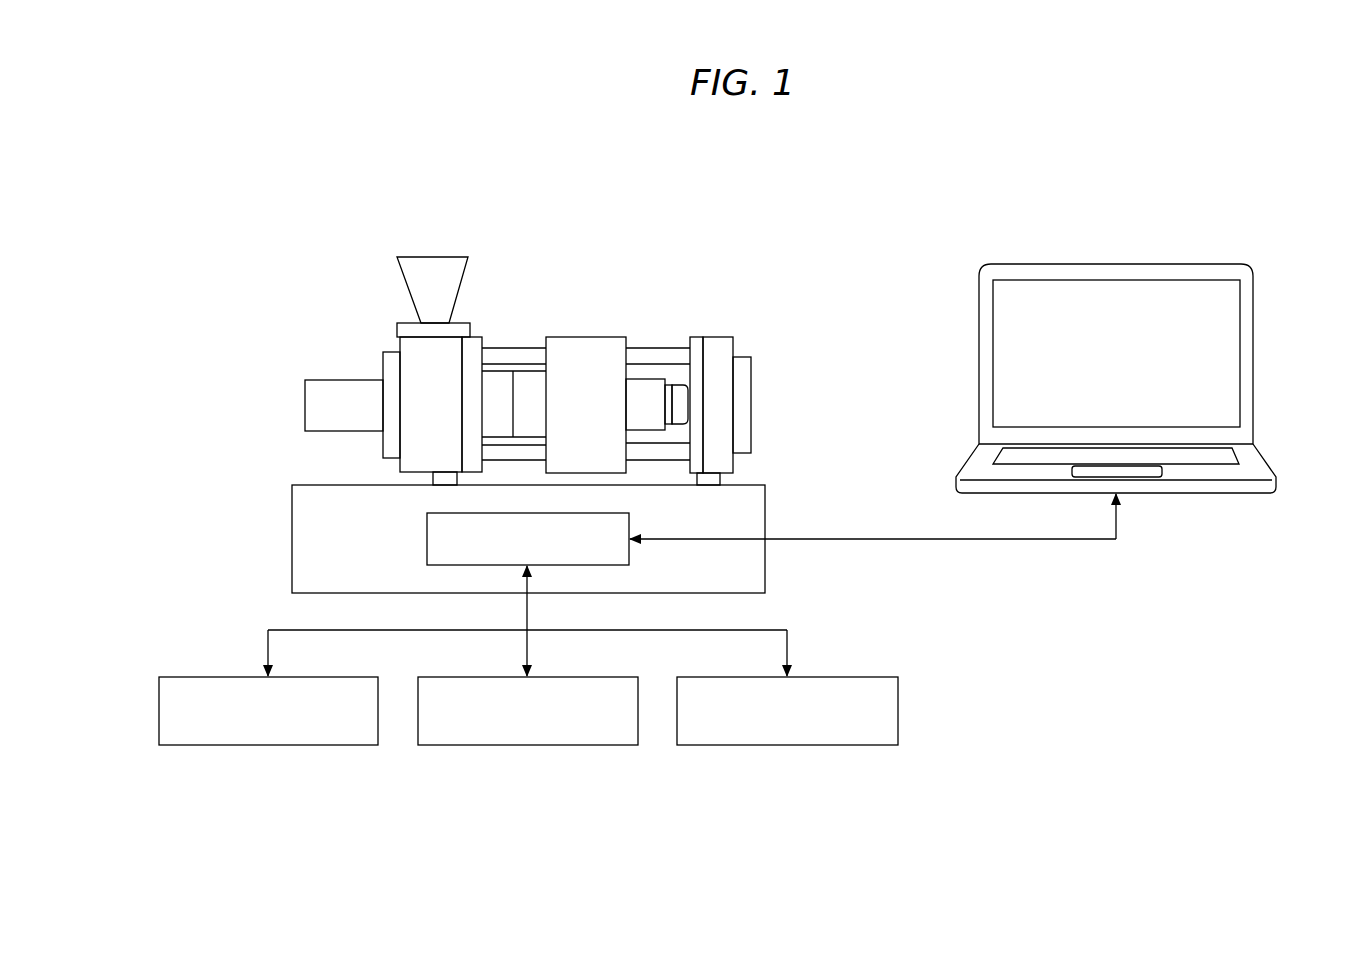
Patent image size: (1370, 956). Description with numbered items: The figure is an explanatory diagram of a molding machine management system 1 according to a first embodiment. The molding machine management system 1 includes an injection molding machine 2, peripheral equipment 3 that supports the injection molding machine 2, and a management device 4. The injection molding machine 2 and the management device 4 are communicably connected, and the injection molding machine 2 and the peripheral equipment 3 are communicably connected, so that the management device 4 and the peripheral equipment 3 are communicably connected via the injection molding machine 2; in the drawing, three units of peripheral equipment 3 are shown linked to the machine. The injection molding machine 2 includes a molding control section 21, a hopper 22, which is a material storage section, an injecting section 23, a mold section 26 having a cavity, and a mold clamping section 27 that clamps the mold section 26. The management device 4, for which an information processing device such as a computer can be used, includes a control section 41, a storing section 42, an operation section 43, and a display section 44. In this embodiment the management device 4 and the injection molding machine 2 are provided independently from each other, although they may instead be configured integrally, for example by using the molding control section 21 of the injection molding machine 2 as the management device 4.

The molding machine management system 1 is at (816, 197).
The injection molding machine 2 is at (648, 240).
The peripheral equipment 3 is at (268, 745).
The management device 4 is at (1118, 264).
The molding control section 21 is at (427, 535).
The hopper 22 is at (435, 257).
The injecting section 23 is at (332, 342).
The mold section 26 is at (497, 385).
The mold clamping section 27 is at (666, 339).
The control section 41 is at (1213, 455).
The storing section 42 is at (1237, 475).
The operation section 43 is at (1017, 455).
The display section 44 is at (1218, 324).